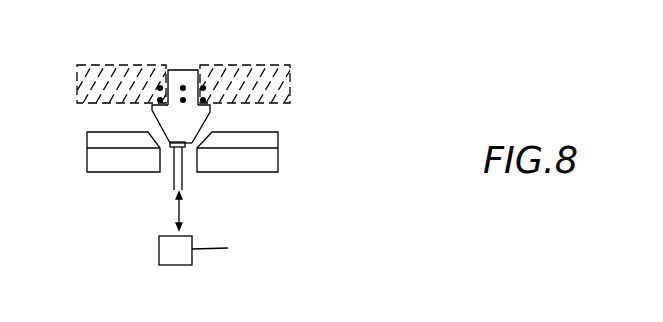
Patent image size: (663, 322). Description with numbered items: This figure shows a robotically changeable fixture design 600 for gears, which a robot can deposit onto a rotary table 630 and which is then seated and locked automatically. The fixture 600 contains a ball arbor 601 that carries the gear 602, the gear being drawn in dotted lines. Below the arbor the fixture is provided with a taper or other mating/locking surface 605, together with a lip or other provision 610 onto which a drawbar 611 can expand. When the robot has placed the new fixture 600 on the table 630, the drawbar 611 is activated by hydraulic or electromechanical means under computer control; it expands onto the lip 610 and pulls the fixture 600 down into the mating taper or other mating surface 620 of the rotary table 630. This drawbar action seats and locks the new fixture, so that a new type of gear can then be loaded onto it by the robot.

The robotically changeable fixture design 600 is at (217, 117).
The ball arbor 601 is at (185, 69).
The gear 602 is at (291, 67).
The taper or other mating/locking surface 605 is at (191, 133).
The lip or other provision 610 is at (172, 180).
The drawbar 611 is at (187, 178).
The mating taper 620 is at (150, 138).
The rotary table 630 is at (280, 145).